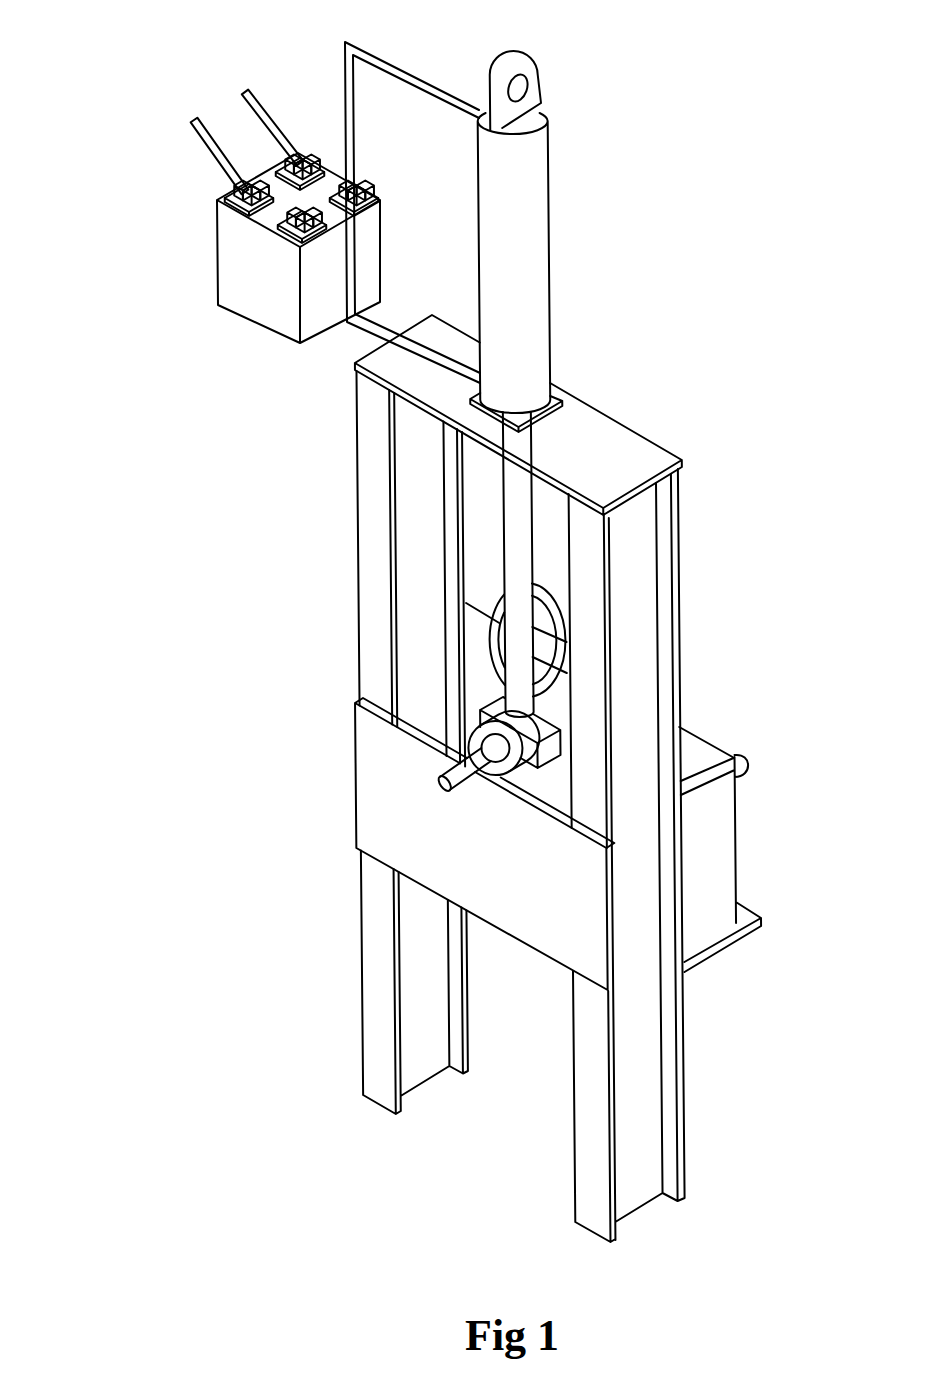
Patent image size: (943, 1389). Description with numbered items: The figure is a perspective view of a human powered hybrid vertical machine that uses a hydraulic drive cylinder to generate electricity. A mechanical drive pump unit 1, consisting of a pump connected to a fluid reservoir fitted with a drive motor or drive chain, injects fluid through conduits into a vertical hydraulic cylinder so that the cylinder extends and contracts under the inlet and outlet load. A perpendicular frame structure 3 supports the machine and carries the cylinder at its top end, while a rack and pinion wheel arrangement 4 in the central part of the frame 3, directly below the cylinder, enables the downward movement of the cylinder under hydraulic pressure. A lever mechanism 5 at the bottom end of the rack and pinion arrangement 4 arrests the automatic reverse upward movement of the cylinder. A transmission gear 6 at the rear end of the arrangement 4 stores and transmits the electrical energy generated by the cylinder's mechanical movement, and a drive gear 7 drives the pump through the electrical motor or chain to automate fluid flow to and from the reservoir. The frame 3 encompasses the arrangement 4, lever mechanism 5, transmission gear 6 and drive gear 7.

The mechanical drive pump unit 1 is at (267, 191).
The perpendicular frame structure 3 is at (681, 628).
The rack and pinion wheel arrangement 4 is at (512, 500).
The lever mechanism 5 is at (483, 718).
The transmission gear 6 is at (436, 781).
The drive gear 7 is at (705, 866).